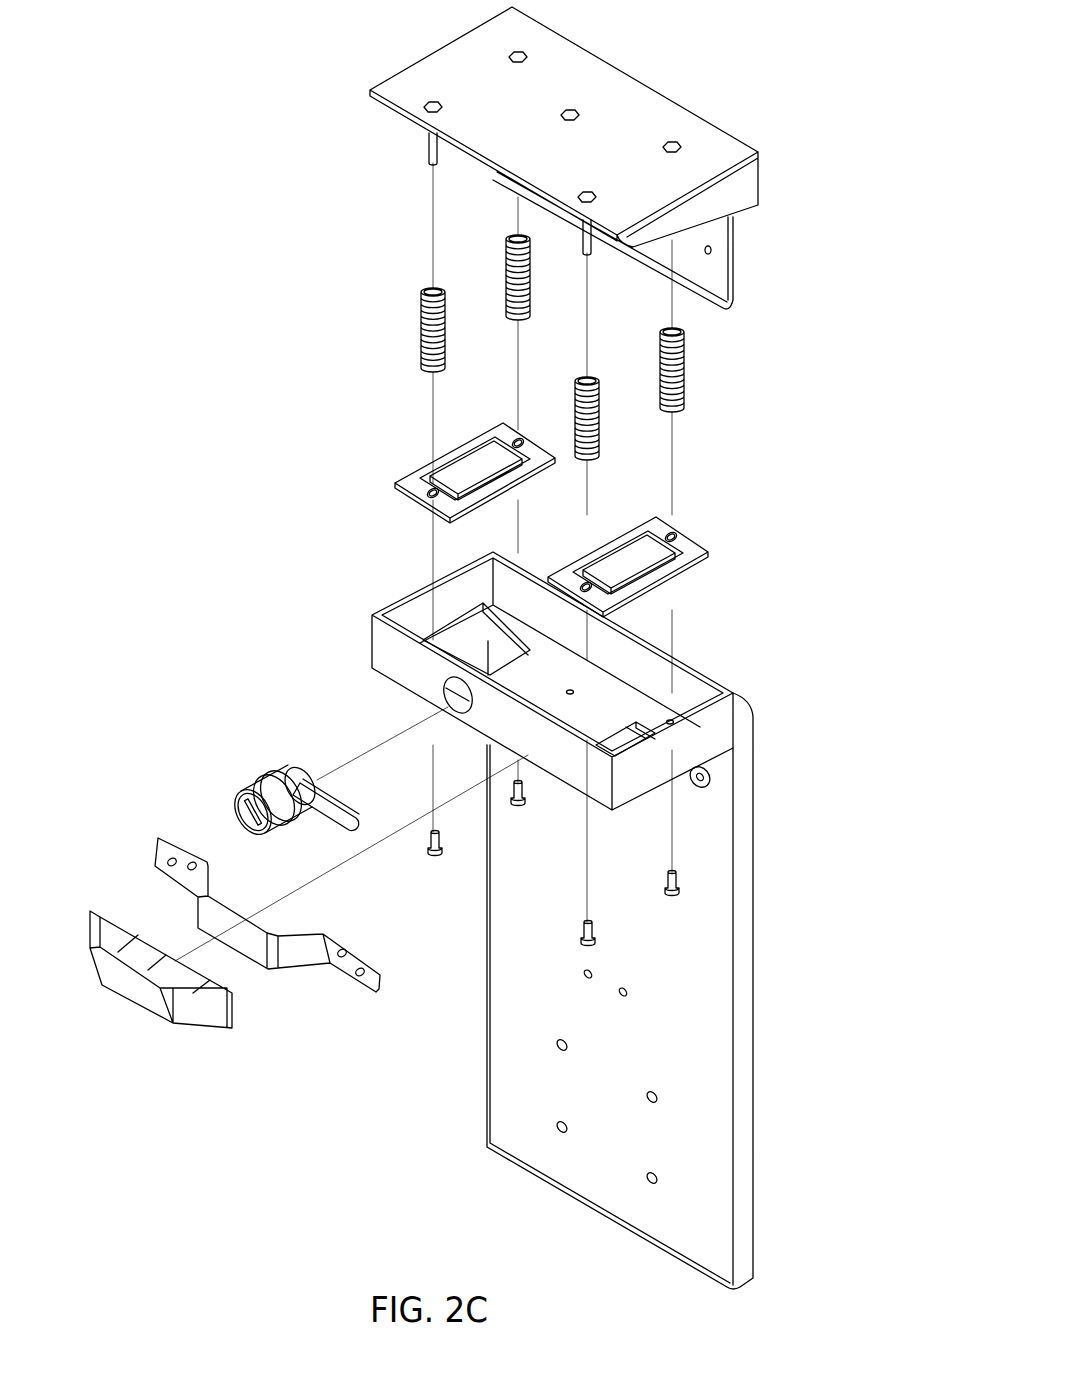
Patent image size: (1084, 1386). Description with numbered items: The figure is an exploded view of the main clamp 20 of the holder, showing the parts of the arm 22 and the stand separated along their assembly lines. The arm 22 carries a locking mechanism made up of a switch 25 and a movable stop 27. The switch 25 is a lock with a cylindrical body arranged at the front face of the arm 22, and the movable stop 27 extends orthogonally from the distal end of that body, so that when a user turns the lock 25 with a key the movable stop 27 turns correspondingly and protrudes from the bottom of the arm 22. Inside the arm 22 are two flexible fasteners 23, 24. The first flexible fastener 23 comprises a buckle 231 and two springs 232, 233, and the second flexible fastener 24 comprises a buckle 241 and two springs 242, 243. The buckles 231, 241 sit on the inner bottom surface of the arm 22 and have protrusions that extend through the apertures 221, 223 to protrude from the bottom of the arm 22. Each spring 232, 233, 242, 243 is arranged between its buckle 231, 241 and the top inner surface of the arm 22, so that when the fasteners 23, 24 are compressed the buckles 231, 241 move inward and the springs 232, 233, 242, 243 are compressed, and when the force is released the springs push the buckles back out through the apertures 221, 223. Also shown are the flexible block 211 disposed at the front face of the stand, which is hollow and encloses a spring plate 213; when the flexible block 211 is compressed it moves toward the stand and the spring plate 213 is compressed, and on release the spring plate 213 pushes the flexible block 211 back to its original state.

The main clamp 20 is at (500, 648).
The arm 22 is at (523, 679).
The aperture 221 is at (472, 653).
The aperture 223 is at (635, 735).
The flexible fastener 23 is at (395, 379).
The buckle 231 is at (426, 466).
The spring 232 is at (422, 335).
The spring 233 is at (507, 263).
The flexible fastener 24 is at (695, 472).
The buckle 241 is at (666, 540).
The spring 242 is at (602, 425).
The spring 243 is at (685, 363).
The switch 25 is at (262, 792).
The movable stop 27 is at (337, 817).
The flexible block 211 is at (137, 993).
The spring plate 213 is at (293, 958).